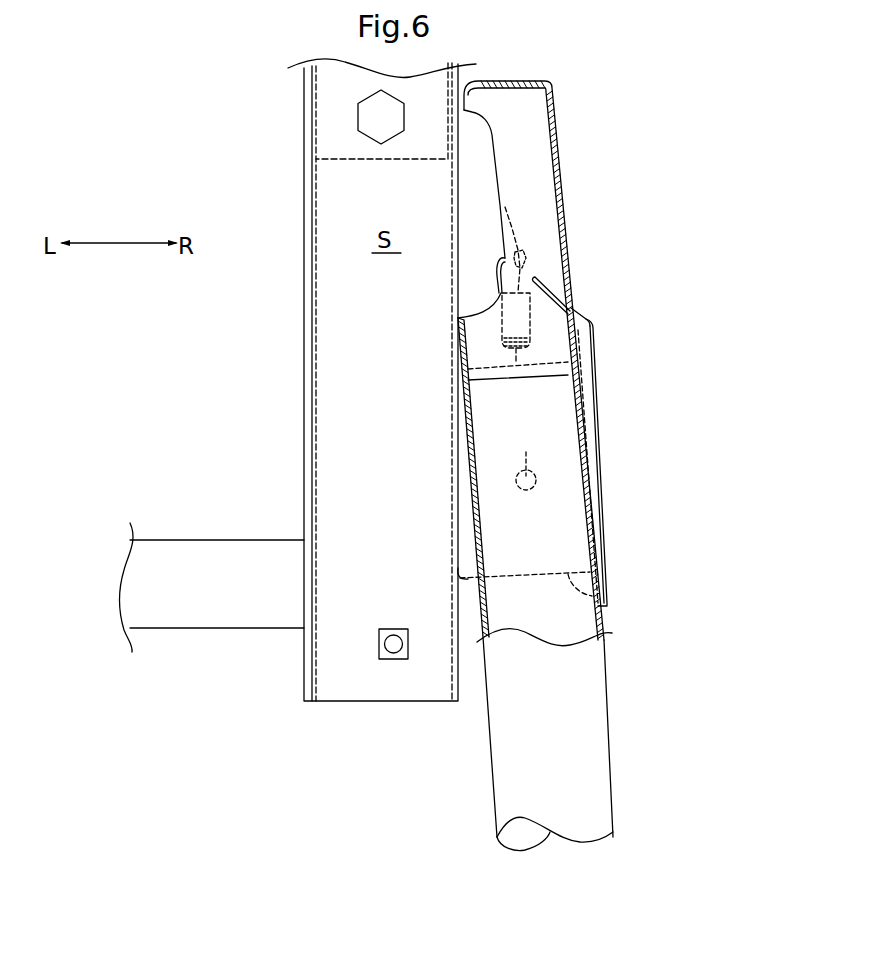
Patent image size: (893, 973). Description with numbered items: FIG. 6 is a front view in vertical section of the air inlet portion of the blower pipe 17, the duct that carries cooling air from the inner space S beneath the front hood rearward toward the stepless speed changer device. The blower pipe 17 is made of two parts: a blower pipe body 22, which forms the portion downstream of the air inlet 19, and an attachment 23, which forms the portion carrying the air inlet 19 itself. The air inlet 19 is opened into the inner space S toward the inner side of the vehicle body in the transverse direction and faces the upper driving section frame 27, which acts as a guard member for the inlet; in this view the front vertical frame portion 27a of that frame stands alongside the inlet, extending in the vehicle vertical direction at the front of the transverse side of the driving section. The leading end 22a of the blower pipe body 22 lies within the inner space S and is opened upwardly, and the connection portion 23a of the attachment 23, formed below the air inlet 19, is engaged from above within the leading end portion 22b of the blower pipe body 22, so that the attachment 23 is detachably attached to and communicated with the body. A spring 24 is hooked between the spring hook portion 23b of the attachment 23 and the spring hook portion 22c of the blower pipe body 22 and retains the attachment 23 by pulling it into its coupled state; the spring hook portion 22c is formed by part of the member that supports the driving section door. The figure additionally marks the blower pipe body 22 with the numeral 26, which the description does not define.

The blower pipe 17 is at (555, 465).
The air inlet 19 is at (476, 217).
The blower pipe body 22 is at (590, 738).
The leading end 22a is at (577, 315).
The leading end portion 22b is at (588, 428).
The spring hook portion 22c is at (600, 597).
The attachment 23 is at (566, 182).
The connection portion 23a is at (465, 353).
The spring hook portion 23b is at (512, 228).
The spring 24 is at (531, 340).
The reinforcing member 26 is at (610, 584).
The upper driving section frame 27 is at (298, 380).
The front vertical frame portion 27a is at (322, 372).